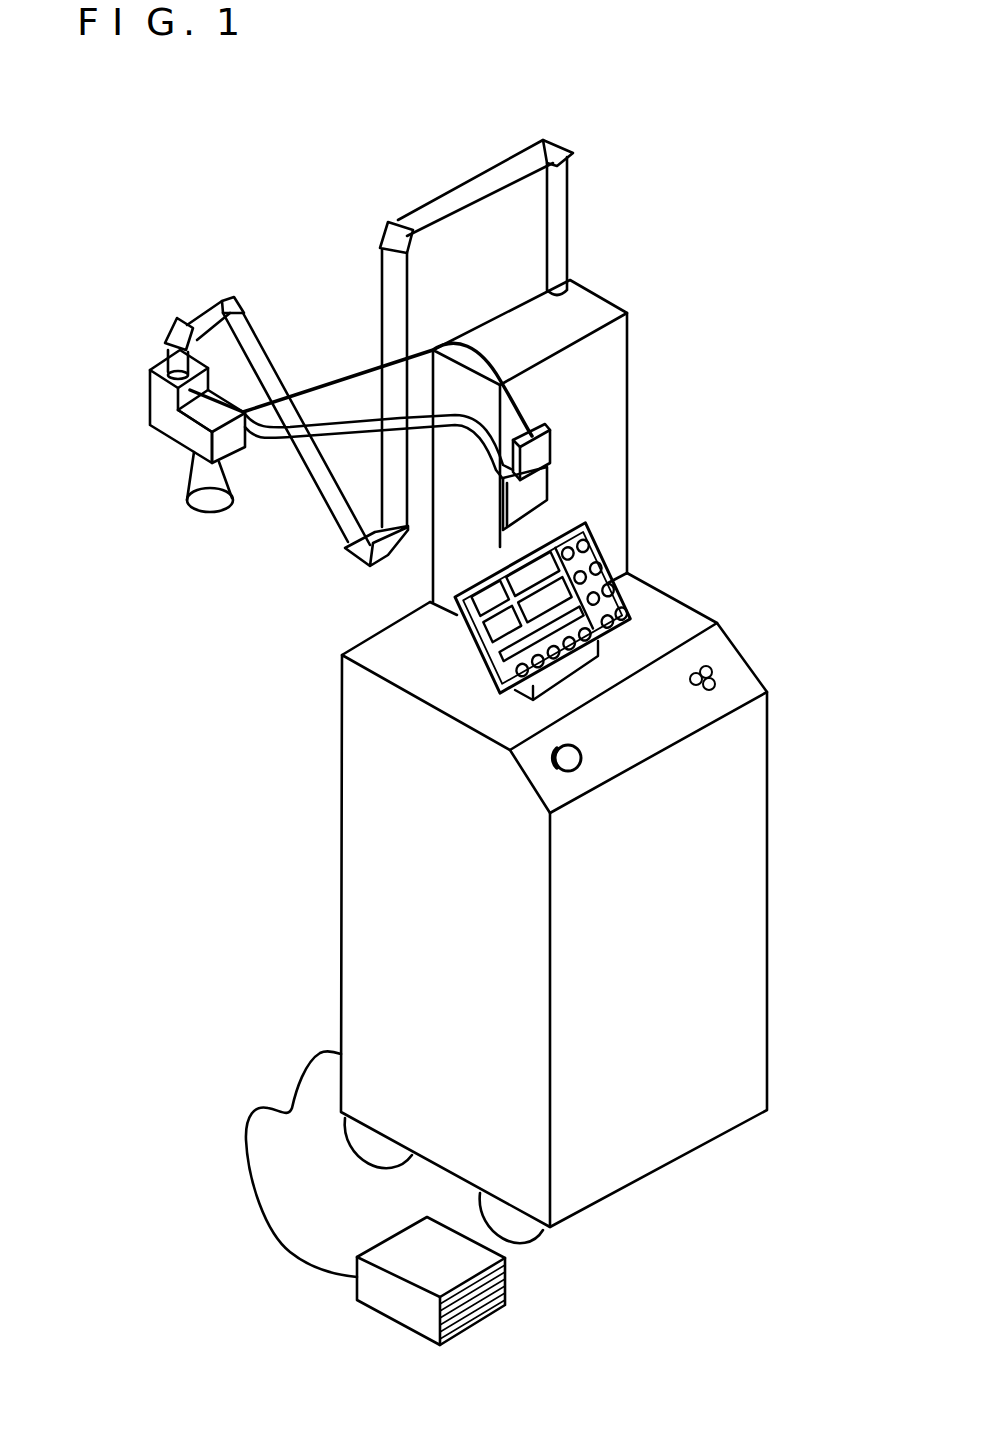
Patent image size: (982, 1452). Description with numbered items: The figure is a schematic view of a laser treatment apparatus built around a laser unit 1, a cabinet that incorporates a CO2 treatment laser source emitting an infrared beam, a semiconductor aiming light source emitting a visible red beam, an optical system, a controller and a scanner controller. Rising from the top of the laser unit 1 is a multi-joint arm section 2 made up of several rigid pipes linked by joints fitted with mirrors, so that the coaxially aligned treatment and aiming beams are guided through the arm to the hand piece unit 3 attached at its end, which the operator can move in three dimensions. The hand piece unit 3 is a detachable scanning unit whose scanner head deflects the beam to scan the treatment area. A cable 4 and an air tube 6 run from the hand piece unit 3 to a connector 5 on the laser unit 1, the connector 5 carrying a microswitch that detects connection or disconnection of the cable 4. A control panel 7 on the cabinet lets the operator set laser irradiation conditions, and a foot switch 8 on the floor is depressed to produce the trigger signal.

The laser unit 1 is at (718, 836).
The multi-joint arm section 2 is at (447, 172).
The hand piece unit 3 is at (148, 443).
The cable 4 is at (352, 383).
The connector 5 is at (542, 486).
The air tube 6 is at (307, 472).
The control panel 7 is at (610, 600).
The foot switch 8 is at (453, 1260).